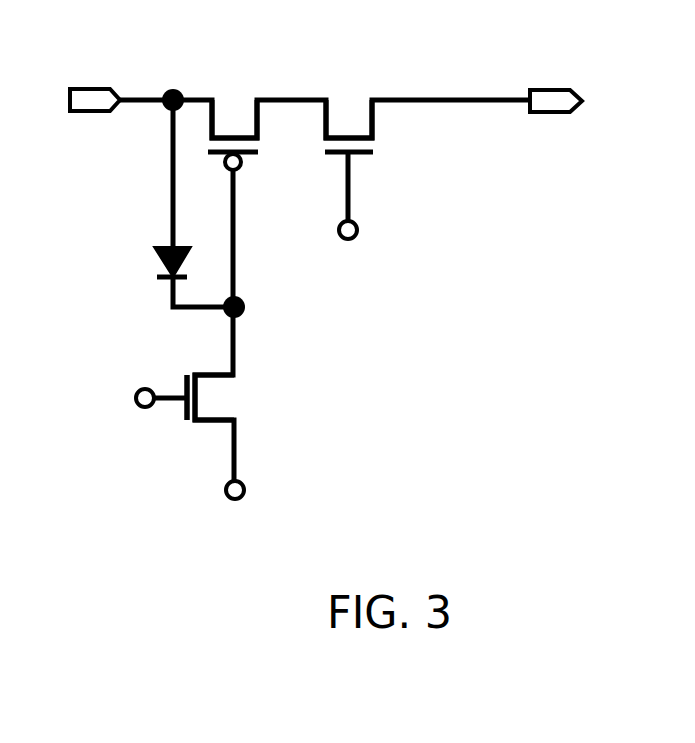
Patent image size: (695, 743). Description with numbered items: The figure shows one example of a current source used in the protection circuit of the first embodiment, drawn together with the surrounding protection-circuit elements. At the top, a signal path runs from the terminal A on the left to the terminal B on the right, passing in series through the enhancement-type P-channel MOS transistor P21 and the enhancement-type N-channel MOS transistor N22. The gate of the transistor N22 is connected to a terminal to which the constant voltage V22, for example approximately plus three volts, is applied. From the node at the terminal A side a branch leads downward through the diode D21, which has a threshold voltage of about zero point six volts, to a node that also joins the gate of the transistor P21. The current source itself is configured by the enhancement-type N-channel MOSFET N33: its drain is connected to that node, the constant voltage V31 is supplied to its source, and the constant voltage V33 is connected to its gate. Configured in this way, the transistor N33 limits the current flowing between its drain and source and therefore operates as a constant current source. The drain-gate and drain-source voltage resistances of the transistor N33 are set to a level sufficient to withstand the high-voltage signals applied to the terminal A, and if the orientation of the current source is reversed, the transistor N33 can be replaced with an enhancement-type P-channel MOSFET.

The node A / first terminal A is at (88, 88).
The node B / second terminal B is at (552, 90).
The P-channel transistor P21 is at (238, 107).
The N-channel transistor N22 is at (348, 98).
The gate voltage terminal of N22 V22 is at (357, 222).
The diode D21 is at (162, 262).
The N-channel transistor N33 is at (238, 403).
The gate voltage terminal of N33 V33 is at (130, 402).
The source voltage terminal of N33 V31 is at (223, 487).